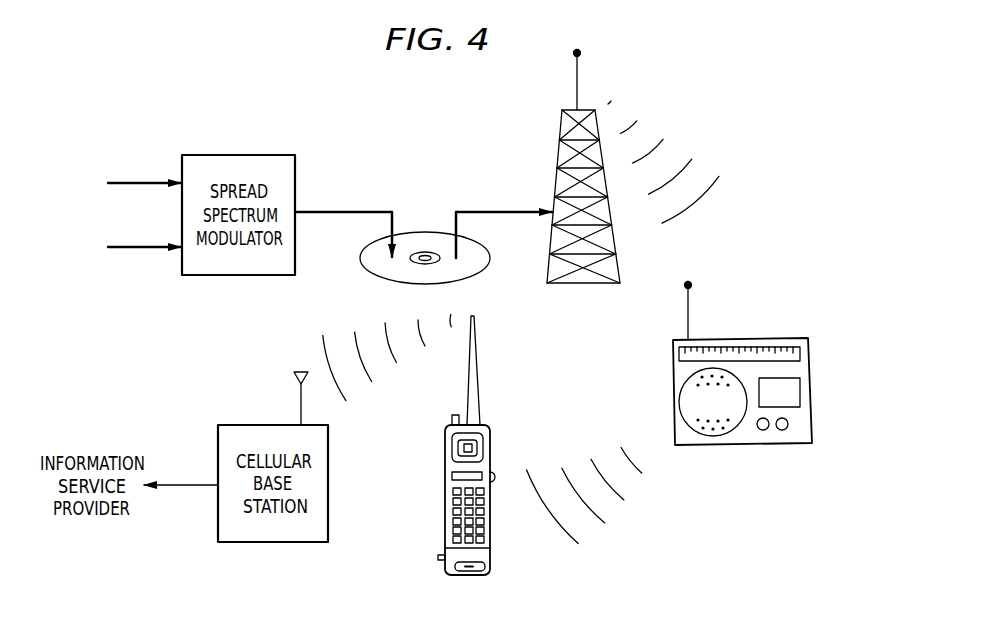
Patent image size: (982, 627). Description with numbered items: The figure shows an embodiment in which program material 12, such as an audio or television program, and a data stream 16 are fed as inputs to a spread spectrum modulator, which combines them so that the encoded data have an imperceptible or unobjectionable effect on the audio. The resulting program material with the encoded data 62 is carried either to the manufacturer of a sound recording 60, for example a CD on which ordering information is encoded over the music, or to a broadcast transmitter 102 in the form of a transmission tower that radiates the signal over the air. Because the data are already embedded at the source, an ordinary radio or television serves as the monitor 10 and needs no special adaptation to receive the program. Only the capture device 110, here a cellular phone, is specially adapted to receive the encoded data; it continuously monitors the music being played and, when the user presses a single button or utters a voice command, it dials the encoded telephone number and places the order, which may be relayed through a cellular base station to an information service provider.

The program material 12 is at (108, 184).
The data stream 16 is at (108, 250).
The program material with the encoded data 62 is at (343, 212).
The sound recording 60 is at (365, 284).
The broadcast transmitter 102 is at (560, 128).
The monitor 10 is at (752, 340).
The capture device 110 is at (443, 523).